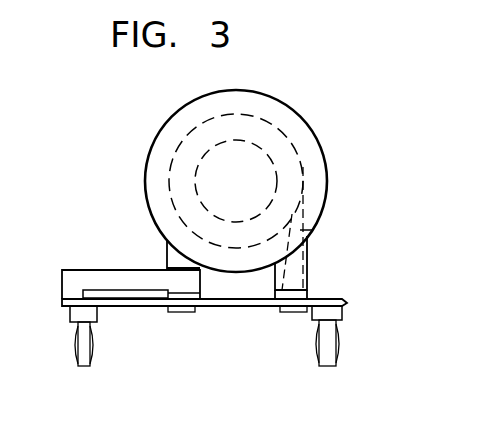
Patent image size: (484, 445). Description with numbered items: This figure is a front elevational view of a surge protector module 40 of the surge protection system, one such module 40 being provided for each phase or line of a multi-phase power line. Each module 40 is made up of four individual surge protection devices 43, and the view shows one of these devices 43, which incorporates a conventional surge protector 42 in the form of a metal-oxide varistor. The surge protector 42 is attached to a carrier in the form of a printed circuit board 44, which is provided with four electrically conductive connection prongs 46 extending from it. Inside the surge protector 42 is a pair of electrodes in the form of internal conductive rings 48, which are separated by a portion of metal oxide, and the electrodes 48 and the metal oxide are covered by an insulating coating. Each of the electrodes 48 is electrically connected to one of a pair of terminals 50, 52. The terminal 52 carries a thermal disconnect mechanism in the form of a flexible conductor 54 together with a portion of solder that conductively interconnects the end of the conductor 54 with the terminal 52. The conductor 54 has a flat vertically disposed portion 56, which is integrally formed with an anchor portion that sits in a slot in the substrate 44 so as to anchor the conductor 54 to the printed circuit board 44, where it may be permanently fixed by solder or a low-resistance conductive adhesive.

The surge protector module 40 is at (279, 95).
The surge protector 42 is at (303, 135).
The surge protection device 43 is at (90, 146).
The printed circuit board 44 is at (348, 302).
The connection prongs 46 is at (85, 362).
The internal conductive rings 48 is at (303, 167).
The terminal 50 is at (308, 261).
The terminal 52 is at (197, 295).
The flexible conductor 54 is at (128, 265).
The flat vertically disposed portion 56 is at (85, 290).